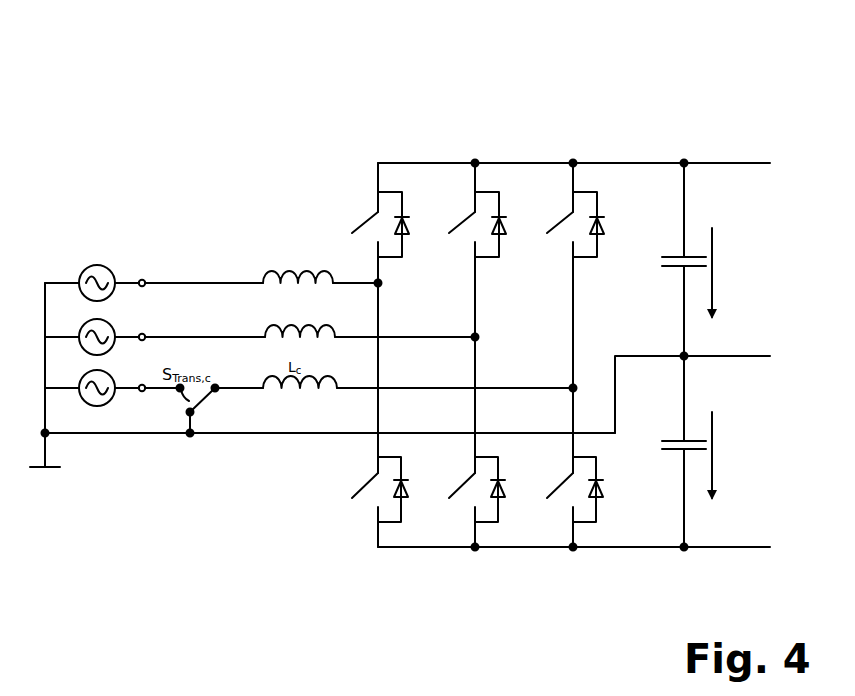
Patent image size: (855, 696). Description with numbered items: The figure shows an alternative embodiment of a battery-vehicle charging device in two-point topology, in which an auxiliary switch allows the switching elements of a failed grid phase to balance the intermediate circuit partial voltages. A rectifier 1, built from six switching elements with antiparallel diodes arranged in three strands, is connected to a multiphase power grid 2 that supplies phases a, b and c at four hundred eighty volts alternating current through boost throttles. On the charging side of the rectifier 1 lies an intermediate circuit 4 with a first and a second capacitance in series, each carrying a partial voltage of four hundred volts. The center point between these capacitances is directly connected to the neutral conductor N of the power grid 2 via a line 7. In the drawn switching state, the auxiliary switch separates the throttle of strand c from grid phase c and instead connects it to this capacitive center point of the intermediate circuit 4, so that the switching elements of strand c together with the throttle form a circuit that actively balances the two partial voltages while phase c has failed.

The rectifier 1 is at (509, 117).
The multiphase power grid 2 is at (140, 207).
The intermediate circuit 4 is at (697, 118).
The line 7 is at (292, 433).